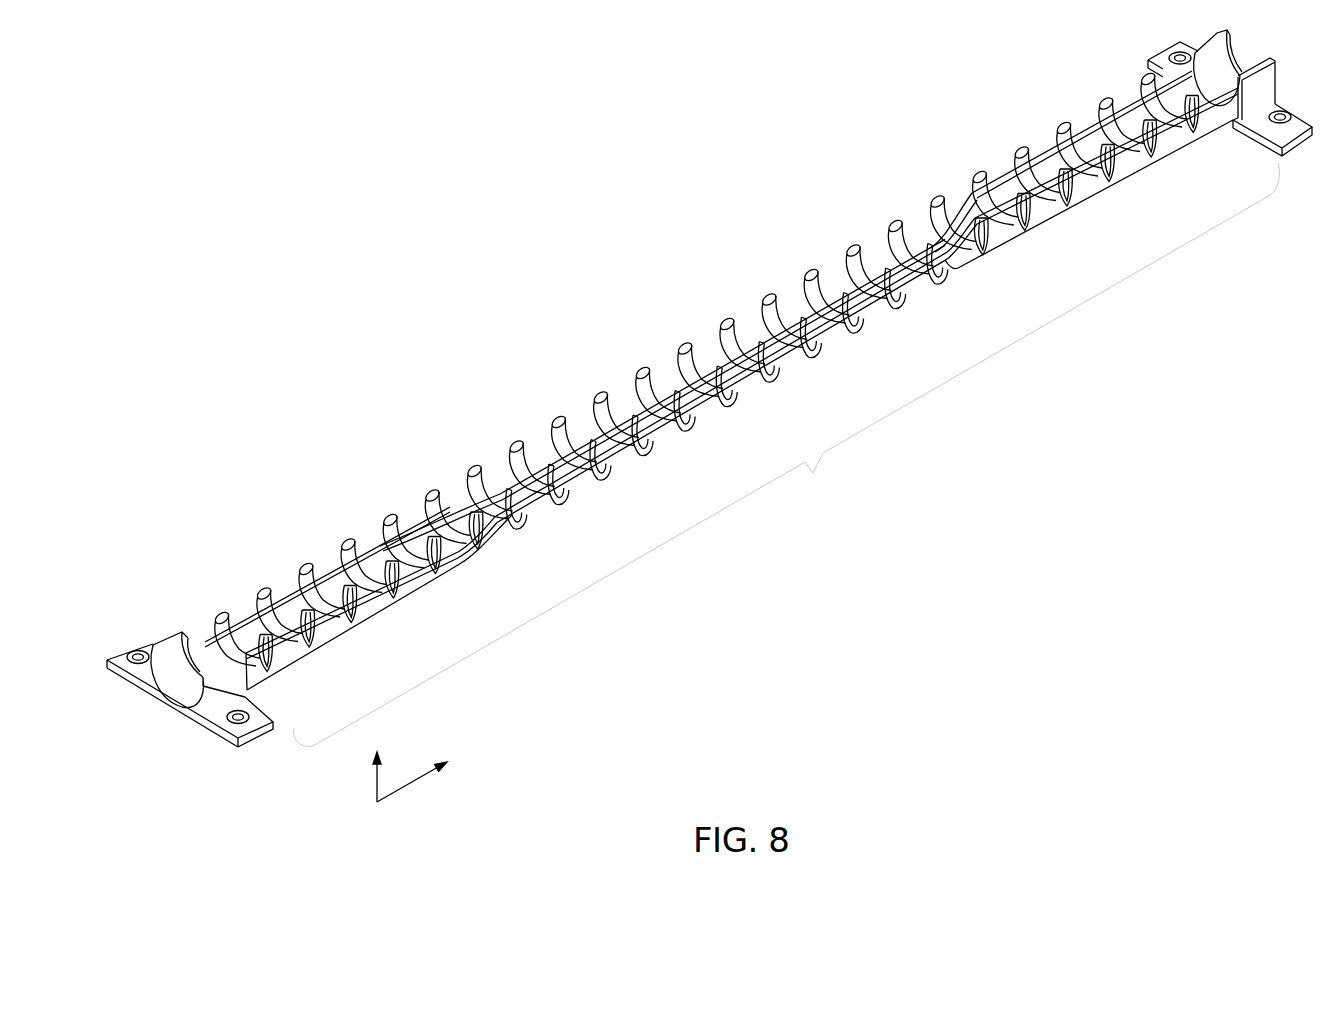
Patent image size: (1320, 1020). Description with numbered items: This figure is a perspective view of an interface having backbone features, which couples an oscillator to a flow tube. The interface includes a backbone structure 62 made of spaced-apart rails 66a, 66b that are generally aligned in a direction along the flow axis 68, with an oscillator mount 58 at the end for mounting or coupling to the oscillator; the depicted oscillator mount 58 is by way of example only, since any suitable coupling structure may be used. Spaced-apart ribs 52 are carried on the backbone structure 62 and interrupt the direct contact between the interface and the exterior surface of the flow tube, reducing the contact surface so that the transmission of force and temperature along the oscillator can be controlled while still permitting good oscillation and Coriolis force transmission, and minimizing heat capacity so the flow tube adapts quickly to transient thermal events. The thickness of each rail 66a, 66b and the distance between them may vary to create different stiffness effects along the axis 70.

The ribs 52 is at (424, 503).
The oscillator mount 58 is at (130, 650).
The backbone structure 62 is at (787, 454).
The rail 66a is at (673, 396).
The rail 66b is at (873, 323).
The flow axis 68 is at (405, 793).
The axis 70 is at (374, 779).